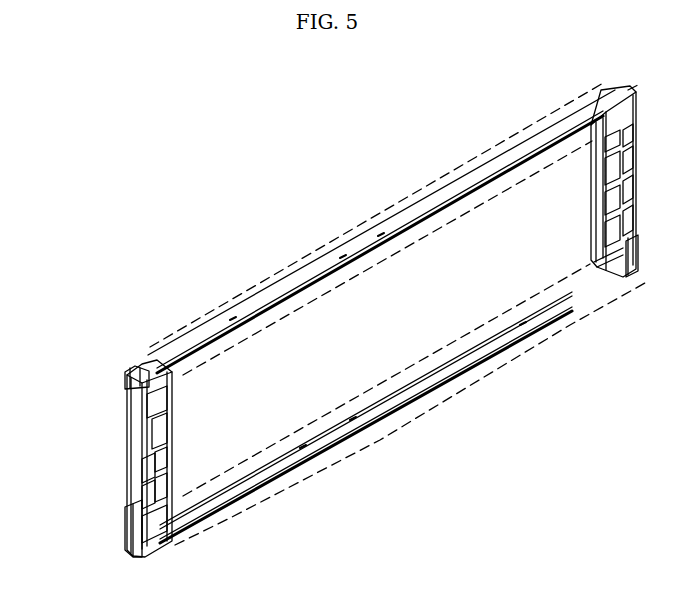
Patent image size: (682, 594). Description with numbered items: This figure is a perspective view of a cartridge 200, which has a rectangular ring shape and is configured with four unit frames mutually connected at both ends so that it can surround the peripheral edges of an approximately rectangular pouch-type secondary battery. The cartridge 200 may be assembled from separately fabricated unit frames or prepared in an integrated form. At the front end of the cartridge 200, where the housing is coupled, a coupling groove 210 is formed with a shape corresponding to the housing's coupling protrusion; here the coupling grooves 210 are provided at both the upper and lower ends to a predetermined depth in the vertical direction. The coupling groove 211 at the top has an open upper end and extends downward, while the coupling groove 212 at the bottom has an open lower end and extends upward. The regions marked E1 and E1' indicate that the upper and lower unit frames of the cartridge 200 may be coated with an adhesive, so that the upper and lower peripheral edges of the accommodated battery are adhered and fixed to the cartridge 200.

The cartridge 200 is at (324, 321).
The coupling groove 210 is at (91, 458).
The coupling groove at the top 211 is at (125, 381).
The coupling groove at the bottom 212 is at (125, 550).
The adhesive-coated region of the upper unit frame E1 is at (395, 228).
The adhesive-coated region of the lower unit frame E1' is at (410, 404).